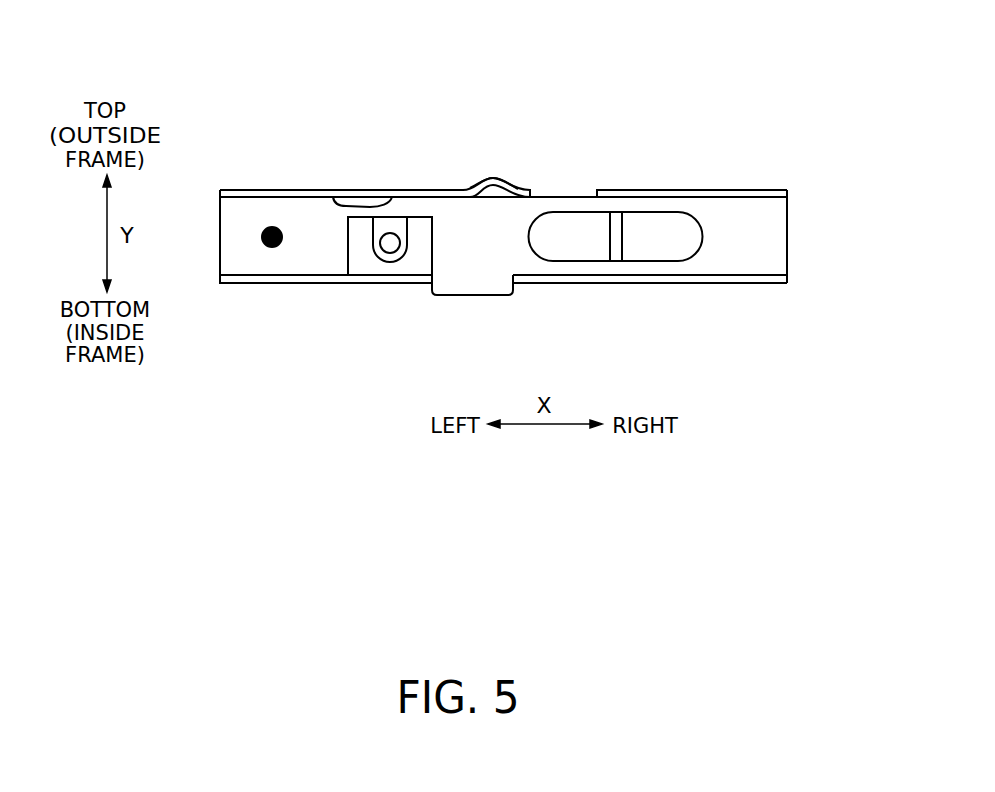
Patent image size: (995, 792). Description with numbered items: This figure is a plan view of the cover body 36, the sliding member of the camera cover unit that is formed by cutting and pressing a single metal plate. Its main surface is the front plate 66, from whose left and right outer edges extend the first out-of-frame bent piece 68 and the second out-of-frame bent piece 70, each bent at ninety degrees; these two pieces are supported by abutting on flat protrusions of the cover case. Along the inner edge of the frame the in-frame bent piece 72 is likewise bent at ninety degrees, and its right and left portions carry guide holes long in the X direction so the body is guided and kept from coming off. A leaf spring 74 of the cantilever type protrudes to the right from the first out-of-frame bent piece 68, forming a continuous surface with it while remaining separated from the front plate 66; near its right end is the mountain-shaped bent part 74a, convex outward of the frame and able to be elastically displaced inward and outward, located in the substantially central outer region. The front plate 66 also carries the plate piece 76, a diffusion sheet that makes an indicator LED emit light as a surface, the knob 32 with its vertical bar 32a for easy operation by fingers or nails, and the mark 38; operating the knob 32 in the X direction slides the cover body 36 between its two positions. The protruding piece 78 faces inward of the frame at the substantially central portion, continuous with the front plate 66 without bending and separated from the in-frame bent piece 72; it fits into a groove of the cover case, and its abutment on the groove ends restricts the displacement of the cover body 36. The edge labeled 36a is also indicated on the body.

The cover body 36 is at (778, 77).
The bottom wall of frame 36a is at (243, 274).
The mark 38 is at (272, 226).
The first out-of-frame bent piece 68 is at (303, 189).
The leaf spring 74 is at (402, 197).
The bent part 74a is at (493, 178).
The knob 32 is at (572, 226).
The vertical bar 32a is at (620, 237).
The second out-of-frame bent piece 70 is at (715, 190).
The front plate 66 is at (777, 222).
The in-frame bent piece 72 is at (713, 283).
The plate piece 76 is at (413, 275).
The protruding piece 78 is at (485, 283).